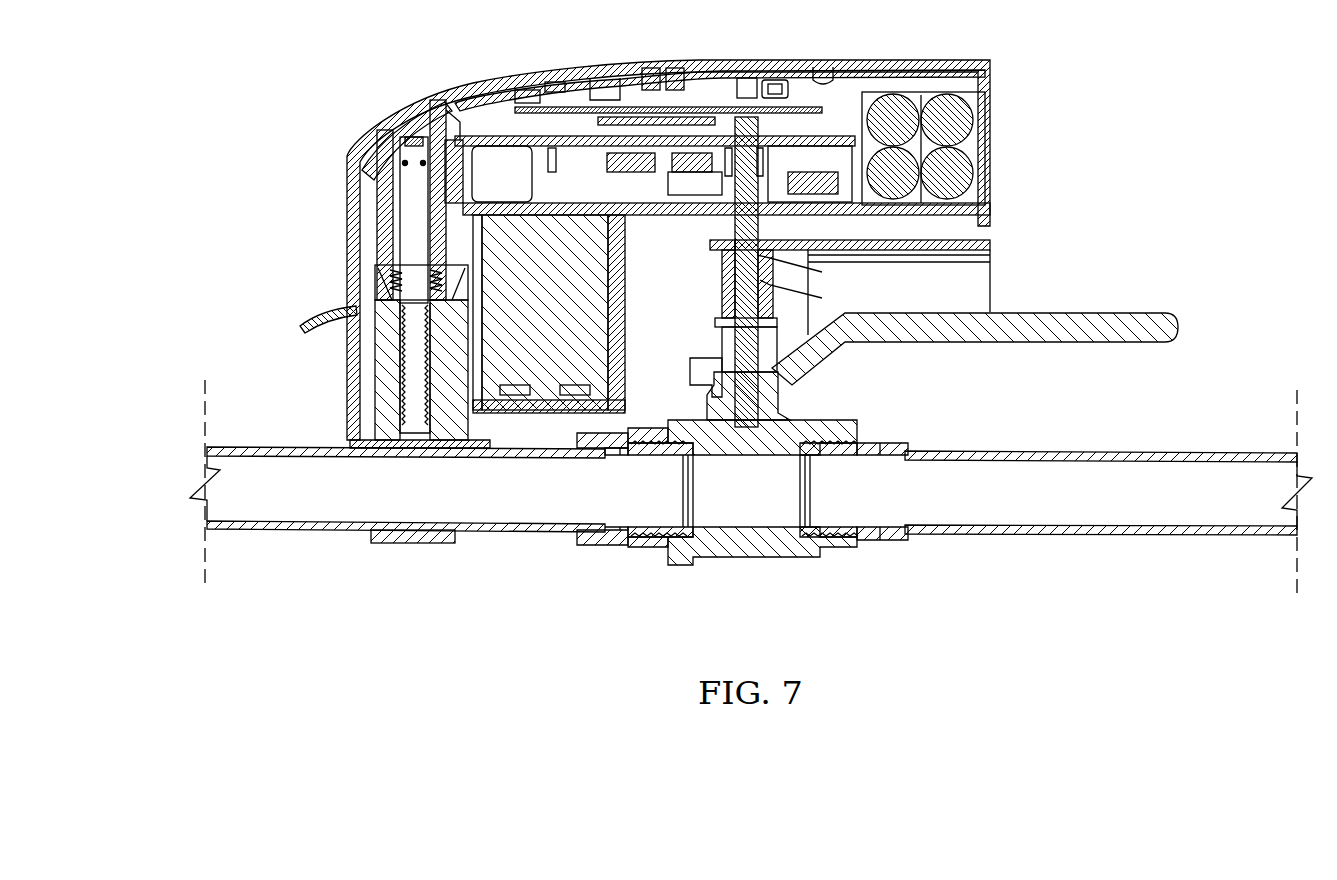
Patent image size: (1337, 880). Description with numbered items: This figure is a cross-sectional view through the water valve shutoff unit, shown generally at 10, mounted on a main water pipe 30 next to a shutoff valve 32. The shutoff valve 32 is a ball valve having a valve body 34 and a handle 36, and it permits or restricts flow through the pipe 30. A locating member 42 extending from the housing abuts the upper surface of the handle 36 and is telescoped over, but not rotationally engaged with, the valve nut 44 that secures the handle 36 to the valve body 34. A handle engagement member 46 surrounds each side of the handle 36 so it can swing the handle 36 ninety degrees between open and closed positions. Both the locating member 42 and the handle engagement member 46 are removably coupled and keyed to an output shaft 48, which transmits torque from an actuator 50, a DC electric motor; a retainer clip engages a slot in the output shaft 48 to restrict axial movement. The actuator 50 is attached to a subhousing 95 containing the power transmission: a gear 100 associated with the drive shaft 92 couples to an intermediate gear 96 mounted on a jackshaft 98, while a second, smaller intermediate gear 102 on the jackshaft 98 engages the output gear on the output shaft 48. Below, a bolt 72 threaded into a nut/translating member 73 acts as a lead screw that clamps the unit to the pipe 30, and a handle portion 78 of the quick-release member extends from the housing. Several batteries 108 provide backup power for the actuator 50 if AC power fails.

The valve assembly 10 is at (300, 90).
The main water pipe 30 is at (512, 530).
The shutoff valve 32 is at (742, 498).
The valve body 34 is at (820, 427).
The handle 36 is at (1160, 330).
The locating member 42 is at (723, 317).
The valve nut 44 is at (713, 347).
The handle engagement member 46 is at (983, 272).
The output shaft 48 is at (745, 290).
The actuator 50 is at (583, 347).
The bolt 72 is at (422, 435).
The nut/translating member 73 is at (377, 278).
The handle portion 78 is at (310, 315).
The drive shaft 92 is at (577, 180).
The subhousing 95 is at (447, 108).
The intermediate gear 96 is at (672, 68).
The jackshaft 98 is at (637, 68).
The gear 100 is at (555, 82).
The second intermediate gear 102 is at (698, 172).
The batteries 108 is at (887, 110).